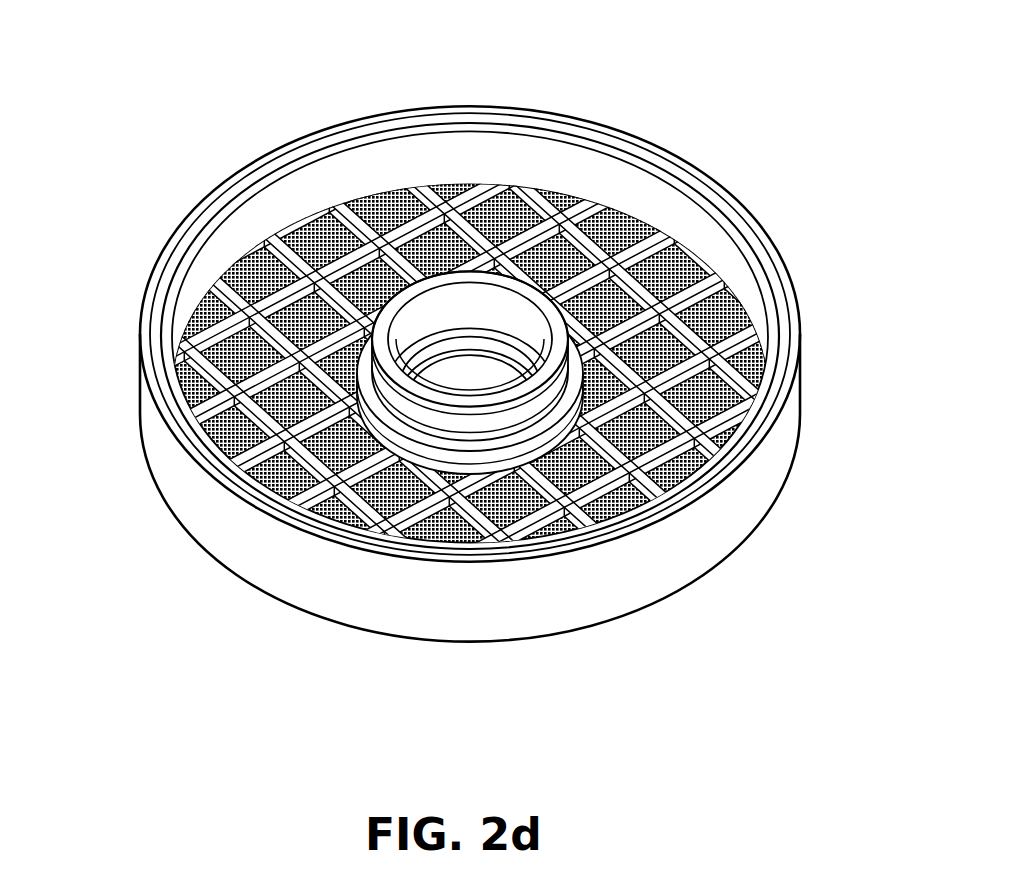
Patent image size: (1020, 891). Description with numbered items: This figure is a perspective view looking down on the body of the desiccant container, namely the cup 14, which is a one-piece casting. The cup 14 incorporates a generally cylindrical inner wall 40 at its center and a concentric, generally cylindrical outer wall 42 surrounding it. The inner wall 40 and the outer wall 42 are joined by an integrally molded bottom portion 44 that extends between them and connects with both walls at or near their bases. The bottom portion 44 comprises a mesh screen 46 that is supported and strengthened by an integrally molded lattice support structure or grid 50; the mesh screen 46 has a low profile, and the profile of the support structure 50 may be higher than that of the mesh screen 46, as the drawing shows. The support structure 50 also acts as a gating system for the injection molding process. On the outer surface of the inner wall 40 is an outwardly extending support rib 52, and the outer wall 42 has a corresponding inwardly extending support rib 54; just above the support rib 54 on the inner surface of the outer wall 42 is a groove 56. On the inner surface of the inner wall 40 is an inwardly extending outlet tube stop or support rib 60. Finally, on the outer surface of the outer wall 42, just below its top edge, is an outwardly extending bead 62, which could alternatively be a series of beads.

The cup 14 is at (443, 349).
The inner wall 40 is at (485, 280).
The outer wall 42 is at (303, 577).
The bottom portion 44 is at (510, 445).
The mesh screen 46 is at (652, 345).
The lattice support structure 50 is at (273, 407).
The support rib 52 is at (549, 381).
The support rib 54 is at (352, 153).
The groove 56 is at (652, 162).
The outlet tube stop 60 is at (455, 330).
The bead 62 is at (263, 512).